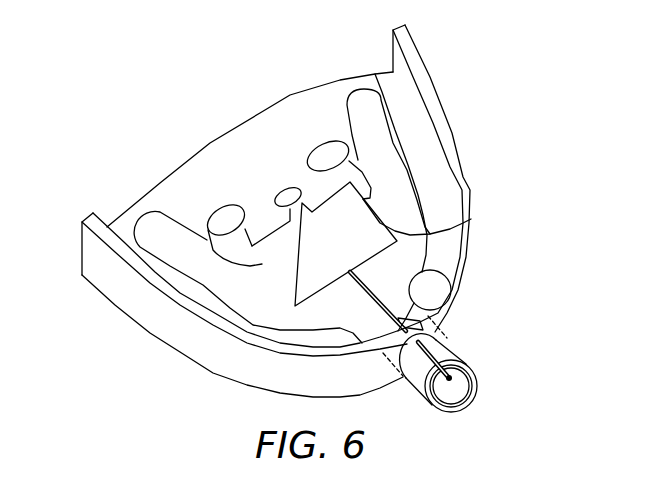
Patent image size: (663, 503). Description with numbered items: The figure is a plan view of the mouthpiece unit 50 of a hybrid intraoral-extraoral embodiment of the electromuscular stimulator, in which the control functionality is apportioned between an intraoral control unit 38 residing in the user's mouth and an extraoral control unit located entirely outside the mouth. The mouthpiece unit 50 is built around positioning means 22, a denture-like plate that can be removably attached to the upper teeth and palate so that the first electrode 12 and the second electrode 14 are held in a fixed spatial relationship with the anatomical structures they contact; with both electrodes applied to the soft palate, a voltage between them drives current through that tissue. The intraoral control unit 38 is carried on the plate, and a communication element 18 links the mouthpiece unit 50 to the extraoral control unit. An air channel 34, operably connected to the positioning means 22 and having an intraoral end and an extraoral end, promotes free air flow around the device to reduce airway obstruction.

The mouthpiece unit 50 is at (508, 90).
The positioning means 22 is at (465, 148).
The first electrode 12 is at (306, 160).
The second electrode 14 is at (225, 208).
The intraoral control unit 38 is at (460, 222).
The air channel 34 is at (448, 282).
The communication element 18 is at (462, 356).